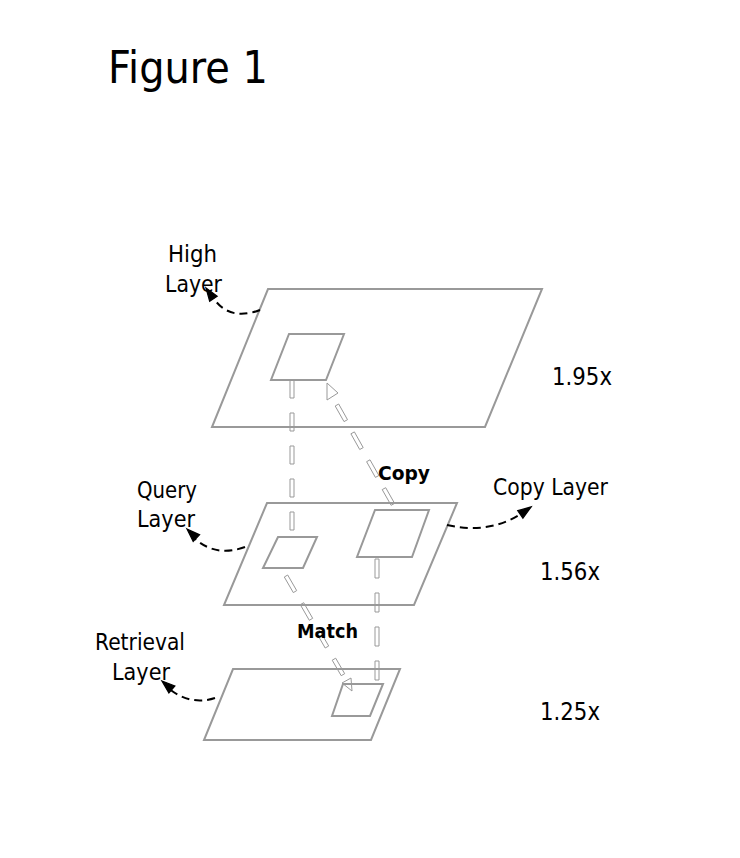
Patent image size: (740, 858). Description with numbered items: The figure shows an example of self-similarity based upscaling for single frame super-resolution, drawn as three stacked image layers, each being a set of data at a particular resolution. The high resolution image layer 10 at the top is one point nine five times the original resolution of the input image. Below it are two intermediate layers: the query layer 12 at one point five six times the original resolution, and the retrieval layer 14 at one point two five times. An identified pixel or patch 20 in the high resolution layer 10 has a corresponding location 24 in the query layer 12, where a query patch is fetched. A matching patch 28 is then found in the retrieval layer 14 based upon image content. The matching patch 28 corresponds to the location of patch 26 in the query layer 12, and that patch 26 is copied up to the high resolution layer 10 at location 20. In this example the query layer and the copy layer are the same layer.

The high resolution image layer 10 is at (227, 386).
The query layer 12 is at (230, 588).
The retrieval layer 14 is at (205, 738).
The identified patch in the high resolution layer 20 is at (318, 338).
The query patch location 24 is at (278, 546).
The copy patch 26 is at (413, 554).
The matching patch 28 is at (373, 707).